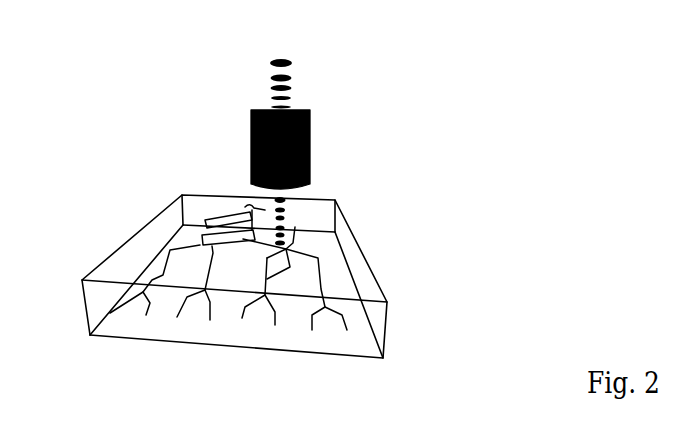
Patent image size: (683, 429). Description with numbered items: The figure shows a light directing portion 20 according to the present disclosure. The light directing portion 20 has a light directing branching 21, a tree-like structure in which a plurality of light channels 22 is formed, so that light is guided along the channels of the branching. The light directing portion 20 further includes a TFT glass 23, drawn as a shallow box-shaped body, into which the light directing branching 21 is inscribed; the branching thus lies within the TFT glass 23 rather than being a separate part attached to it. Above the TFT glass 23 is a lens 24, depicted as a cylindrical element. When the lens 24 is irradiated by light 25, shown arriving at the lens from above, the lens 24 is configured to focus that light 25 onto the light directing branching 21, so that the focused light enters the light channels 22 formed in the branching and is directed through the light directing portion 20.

The light directing portion 20 is at (213, 143).
The light directing branching 21 is at (233, 202).
The light channels 22 is at (334, 312).
The TFT glass 23 is at (82, 280).
The lens 24 is at (311, 148).
The light 25 is at (286, 59).